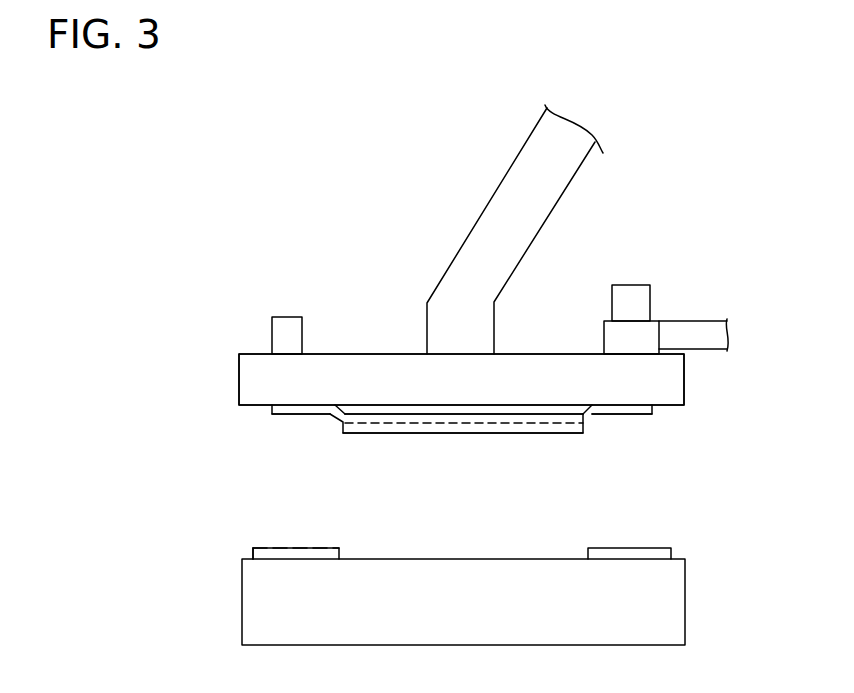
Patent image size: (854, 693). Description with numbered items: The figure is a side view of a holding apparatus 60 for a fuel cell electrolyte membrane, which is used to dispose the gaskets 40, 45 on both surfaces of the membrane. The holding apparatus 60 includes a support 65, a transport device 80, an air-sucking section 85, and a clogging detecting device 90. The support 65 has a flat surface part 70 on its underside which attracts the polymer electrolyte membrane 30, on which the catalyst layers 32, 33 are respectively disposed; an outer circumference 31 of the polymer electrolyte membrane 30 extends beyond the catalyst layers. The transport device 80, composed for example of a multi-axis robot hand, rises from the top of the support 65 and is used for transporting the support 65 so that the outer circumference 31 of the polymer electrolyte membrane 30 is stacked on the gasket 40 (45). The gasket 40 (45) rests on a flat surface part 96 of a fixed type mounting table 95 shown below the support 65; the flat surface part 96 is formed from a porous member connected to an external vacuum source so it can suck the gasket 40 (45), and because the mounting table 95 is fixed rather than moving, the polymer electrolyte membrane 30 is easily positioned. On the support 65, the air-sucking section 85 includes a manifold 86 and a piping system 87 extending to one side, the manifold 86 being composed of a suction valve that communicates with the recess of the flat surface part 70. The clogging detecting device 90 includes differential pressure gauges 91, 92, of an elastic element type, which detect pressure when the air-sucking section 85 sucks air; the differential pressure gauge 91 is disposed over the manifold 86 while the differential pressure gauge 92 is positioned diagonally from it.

The holding apparatus 60 is at (285, 178).
The support 65 is at (256, 354).
The flat surface part 70 is at (255, 414).
The polymer electrolyte membrane 30 is at (483, 425).
The outer circumference 31 is at (596, 413).
The catalyst layer 32 is at (446, 434).
The catalyst layer 33 is at (545, 415).
The transport device 80 is at (510, 170).
The air-sucking section 85 is at (772, 292).
The manifold 86 is at (660, 333).
The piping system 87 is at (707, 350).
The clogging detecting device 90 is at (403, 253).
The differential pressure gauge 91 is at (612, 302).
The differential pressure gauge 92 is at (284, 317).
The gasket 40 is at (276, 546).
The gasket 45 is at (462, 553).
The mounting table 95 is at (686, 603).
The flat surface part 96 is at (248, 547).